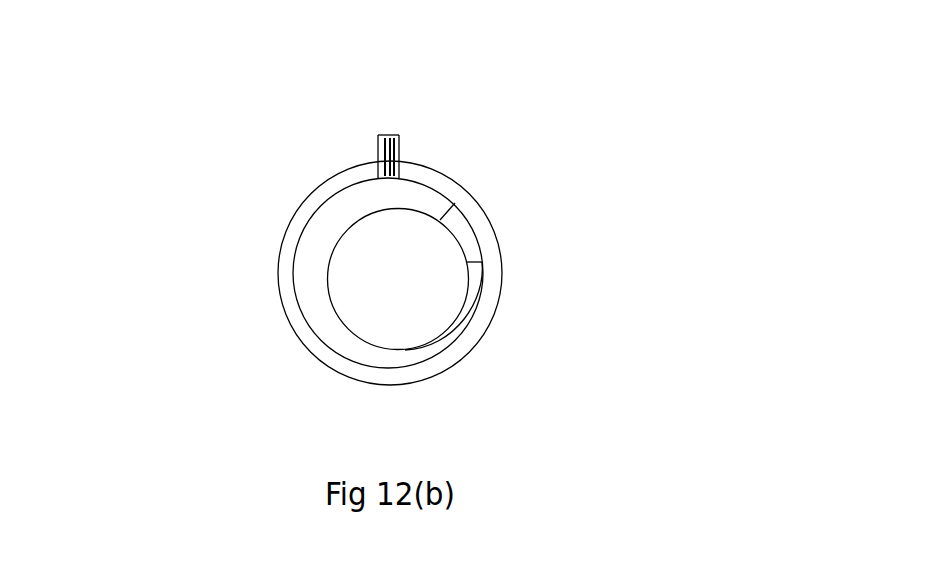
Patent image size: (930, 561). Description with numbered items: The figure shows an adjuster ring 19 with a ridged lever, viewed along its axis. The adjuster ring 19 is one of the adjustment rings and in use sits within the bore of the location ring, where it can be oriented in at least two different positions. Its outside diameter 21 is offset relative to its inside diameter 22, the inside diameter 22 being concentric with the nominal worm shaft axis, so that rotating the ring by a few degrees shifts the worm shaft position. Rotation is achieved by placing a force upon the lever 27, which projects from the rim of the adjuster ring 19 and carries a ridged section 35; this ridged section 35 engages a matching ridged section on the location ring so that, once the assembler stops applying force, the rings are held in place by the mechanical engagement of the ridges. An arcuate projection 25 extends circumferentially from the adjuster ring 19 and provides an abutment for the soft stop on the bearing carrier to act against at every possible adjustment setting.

The adjuster ring 19 is at (362, 275).
The outside diameter 21 is at (281, 273).
The inside diameter 22 is at (332, 253).
The arcuate projection 25 is at (477, 246).
The lever 27 is at (377, 152).
The ridged section 35 is at (396, 146).